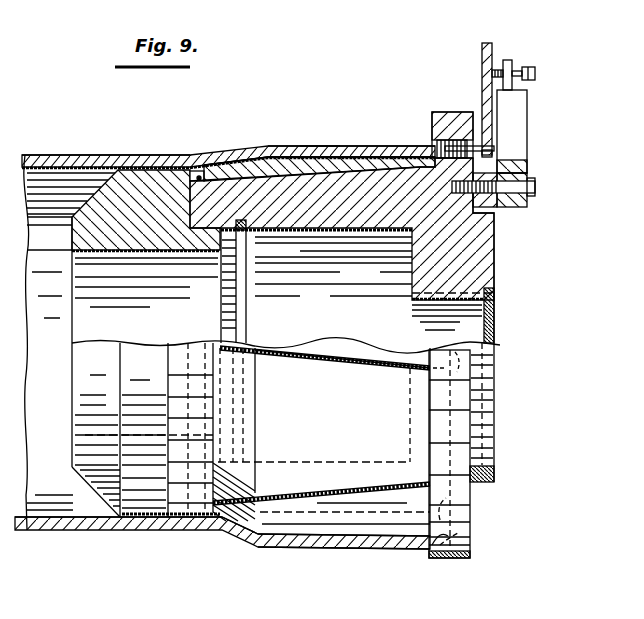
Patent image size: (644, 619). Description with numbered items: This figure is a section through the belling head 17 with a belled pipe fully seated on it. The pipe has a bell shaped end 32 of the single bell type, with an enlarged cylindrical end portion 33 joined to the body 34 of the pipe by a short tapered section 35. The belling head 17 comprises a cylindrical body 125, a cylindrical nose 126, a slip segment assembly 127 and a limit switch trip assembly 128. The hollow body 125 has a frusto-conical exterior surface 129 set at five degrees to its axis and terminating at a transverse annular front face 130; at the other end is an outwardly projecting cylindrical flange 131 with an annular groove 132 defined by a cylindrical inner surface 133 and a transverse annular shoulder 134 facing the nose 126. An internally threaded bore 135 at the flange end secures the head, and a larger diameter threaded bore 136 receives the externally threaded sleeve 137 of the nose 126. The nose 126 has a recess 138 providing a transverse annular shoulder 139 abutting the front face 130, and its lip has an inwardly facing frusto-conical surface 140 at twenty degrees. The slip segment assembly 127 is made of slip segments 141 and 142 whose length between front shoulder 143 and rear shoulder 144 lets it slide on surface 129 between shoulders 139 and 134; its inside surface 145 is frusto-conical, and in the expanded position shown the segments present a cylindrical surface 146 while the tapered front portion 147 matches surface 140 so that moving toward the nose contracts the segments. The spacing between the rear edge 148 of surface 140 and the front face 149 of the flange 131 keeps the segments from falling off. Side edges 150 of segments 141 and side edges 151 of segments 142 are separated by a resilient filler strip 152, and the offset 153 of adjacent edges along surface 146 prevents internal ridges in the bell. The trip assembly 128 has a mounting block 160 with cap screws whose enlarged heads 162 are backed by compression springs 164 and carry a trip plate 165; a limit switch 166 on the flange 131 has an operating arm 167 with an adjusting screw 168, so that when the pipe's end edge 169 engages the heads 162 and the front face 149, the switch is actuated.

The belling head 17 is at (325, 134).
The bell shaped end 32 is at (258, 543).
The enlarged cylindrical end portion 33 is at (334, 542).
The body 34 is at (42, 531).
The short tapered section 35 is at (235, 542).
The cylindrical body 125 is at (368, 220).
The cylindrical nose 126 is at (147, 166).
The slip segment assembly 127 is at (354, 164).
The limit switch trip assembly 128 is at (460, 106).
The frusto-conical exterior surface 129 is at (268, 147).
The transverse annular front face 130 is at (185, 220).
The outwardly projecting cylindrical flange 131 is at (458, 558).
The annular groove 132 is at (404, 530).
The cylindrical inner surface 133 is at (472, 555).
The transverse annular shoulder 134 is at (450, 498).
The internally threaded bore 135 is at (350, 268).
The larger diameter threaded bore 136 is at (248, 236).
The externally threaded sleeve 137 is at (203, 238).
The recess 138 is at (184, 158).
The transverse annular shoulder 139 is at (200, 200).
The inwardly facing frusto-conical surface 140 is at (201, 169).
The slip segments 141 is at (298, 386).
The slip segments 142 is at (372, 340).
The front shoulder 143 is at (173, 527).
The rear shoulder 144 is at (456, 532).
The inside surface 145 is at (342, 182).
The cylindrical surface 146 is at (302, 148).
The tapered front portion 147 is at (250, 142).
The rear edge 148 is at (219, 530).
The front face 149 is at (430, 548).
The side edges 150 is at (320, 362).
The side edges 151 is at (333, 372).
The filler strip 152 is at (368, 368).
The offset 153 is at (490, 350).
The mounting block 160 is at (433, 111).
The enlarged head 162 is at (436, 146).
The compression spring 164 is at (433, 112).
The trip plate 165 is at (486, 43).
The limit switch 166 is at (516, 200).
The operating arm 167 is at (507, 58).
The adjusting screw 168 is at (532, 66).
The end edge 169 is at (440, 186).